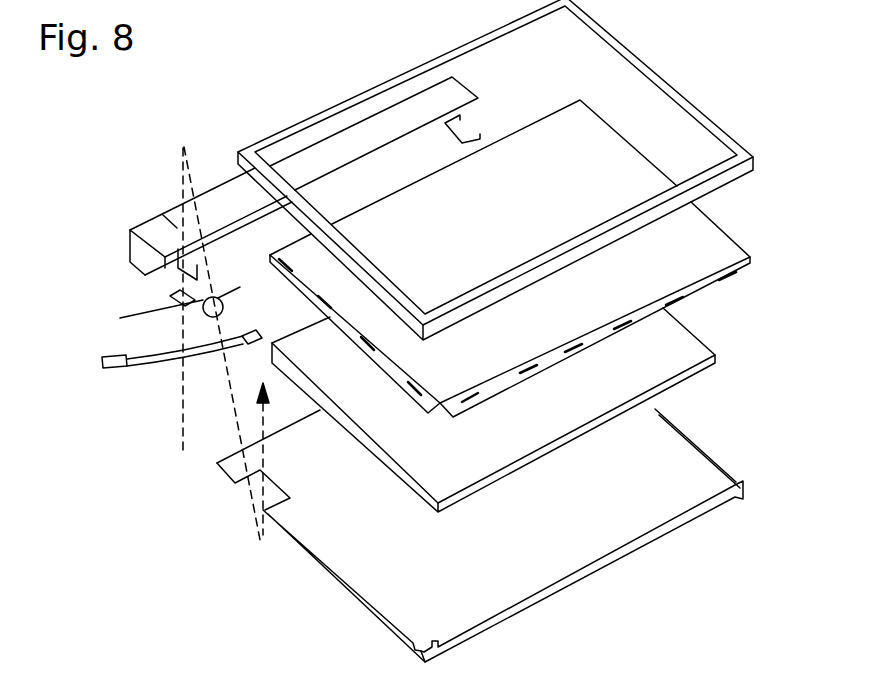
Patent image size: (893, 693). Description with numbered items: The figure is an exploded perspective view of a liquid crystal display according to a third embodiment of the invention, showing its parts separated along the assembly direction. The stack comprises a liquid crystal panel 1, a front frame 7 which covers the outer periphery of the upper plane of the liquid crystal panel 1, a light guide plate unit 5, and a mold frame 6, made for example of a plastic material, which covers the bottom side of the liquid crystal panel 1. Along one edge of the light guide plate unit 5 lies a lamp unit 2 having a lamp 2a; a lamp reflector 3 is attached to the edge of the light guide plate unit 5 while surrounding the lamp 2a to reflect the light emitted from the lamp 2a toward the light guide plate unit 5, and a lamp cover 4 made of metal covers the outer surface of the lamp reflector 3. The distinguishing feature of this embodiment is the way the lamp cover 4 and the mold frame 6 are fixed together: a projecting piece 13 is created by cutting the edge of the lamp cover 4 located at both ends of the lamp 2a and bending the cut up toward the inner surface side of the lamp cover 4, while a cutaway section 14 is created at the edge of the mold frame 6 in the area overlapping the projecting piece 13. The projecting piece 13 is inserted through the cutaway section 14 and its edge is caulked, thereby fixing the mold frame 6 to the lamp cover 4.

The front frame 7 is at (737, 156).
The liquid crystal panel 1 is at (707, 253).
The light guide plate unit 5 is at (673, 357).
The mold frame 6 is at (740, 484).
The lamp cover 4 is at (173, 237).
The projecting piece 13 is at (170, 288).
The lamp reflector 3 is at (120, 318).
The lamp unit 2 is at (137, 367).
The lamp 2a is at (250, 345).
The cutaway section 14 is at (277, 492).